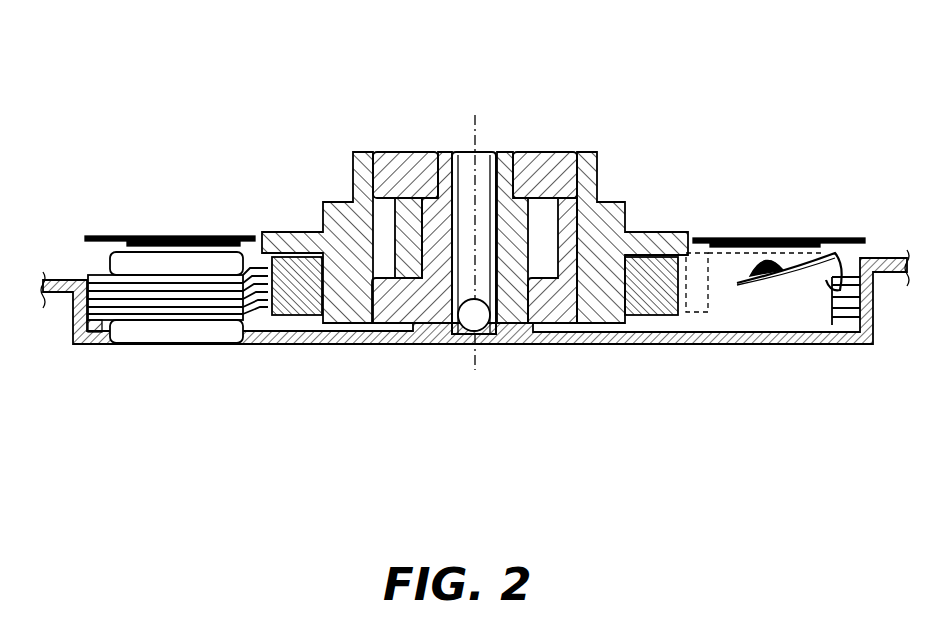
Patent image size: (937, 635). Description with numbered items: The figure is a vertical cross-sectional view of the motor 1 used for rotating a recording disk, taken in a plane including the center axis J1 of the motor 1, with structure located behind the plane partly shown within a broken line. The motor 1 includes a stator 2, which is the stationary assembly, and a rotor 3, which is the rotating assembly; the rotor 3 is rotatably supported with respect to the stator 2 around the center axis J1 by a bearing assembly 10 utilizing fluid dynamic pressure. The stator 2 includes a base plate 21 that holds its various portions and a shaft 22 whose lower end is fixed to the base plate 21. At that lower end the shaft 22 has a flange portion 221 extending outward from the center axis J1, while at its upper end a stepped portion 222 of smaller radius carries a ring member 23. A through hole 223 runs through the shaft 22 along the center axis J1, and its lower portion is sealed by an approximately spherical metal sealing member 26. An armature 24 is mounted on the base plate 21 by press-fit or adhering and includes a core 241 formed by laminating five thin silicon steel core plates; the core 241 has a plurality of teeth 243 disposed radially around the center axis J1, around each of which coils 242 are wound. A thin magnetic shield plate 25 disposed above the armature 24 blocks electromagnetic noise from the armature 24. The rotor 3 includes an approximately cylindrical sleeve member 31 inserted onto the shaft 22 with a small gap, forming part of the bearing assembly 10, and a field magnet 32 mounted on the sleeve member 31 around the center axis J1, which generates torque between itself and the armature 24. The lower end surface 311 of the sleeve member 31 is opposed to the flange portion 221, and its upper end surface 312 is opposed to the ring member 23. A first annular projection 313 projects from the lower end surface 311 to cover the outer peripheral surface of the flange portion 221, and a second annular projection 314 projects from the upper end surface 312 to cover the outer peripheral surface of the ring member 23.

The motor 1 is at (123, 53).
The stator 2 is at (389, 243).
The rotor 3 is at (658, 270).
The bearing assembly 10 is at (495, 138).
The base plate 21 is at (290, 342).
The shaft 22 is at (441, 250).
The ring member 23 is at (372, 200).
The armature 24 is at (150, 455).
The magnetic shield plate 25 is at (170, 235).
The sealing member 26 is at (482, 318).
The sleeve member 31 is at (629, 270).
The field magnet 32 is at (655, 296).
The flange portion 221 is at (400, 305).
The stepped portion 222 is at (437, 193).
The through hole 223 is at (465, 237).
The core 241 is at (202, 418).
The coils 242 is at (147, 330).
The teeth 243 is at (185, 298).
The lower end surface 311 is at (543, 280).
The upper end surface 312 is at (550, 193).
The first annular projection 313 is at (597, 303).
The second annular projection 314 is at (588, 180).
The center axis J1 is at (472, 128).